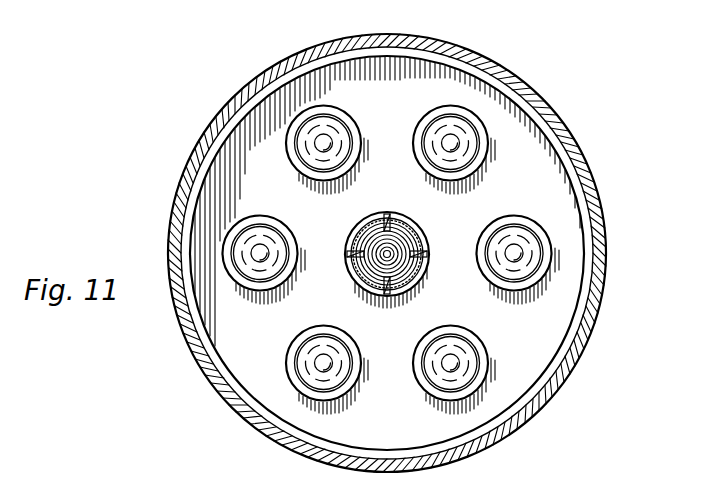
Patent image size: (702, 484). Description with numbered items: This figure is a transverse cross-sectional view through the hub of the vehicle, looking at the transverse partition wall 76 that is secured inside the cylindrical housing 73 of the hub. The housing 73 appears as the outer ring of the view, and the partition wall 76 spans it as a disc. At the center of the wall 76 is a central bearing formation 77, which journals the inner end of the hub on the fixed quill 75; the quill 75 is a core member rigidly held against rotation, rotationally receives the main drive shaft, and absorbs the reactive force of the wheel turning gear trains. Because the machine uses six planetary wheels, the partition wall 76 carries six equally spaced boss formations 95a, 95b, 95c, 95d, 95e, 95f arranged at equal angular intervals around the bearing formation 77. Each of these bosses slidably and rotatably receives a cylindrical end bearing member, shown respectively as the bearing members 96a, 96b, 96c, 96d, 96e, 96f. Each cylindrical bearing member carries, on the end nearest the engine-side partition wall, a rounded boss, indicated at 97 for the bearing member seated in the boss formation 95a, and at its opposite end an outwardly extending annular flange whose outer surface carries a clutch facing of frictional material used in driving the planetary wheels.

The cylindrical housing 73 is at (600, 204).
The transverse partition wall 76 is at (548, 160).
The central bearing formation 77 is at (372, 213).
The fixed quill 75 is at (406, 228).
The boss formation 95a is at (486, 358).
The boss formation 95b is at (287, 366).
The boss formation 95c is at (255, 287).
The boss formation 95d is at (291, 162).
The boss formation 95e is at (439, 108).
The boss formation 95f is at (523, 218).
The cylindrical end bearing member 96a is at (432, 362).
The cylindrical end bearing member 96b is at (318, 348).
The cylindrical end bearing member 96c is at (272, 238).
The cylindrical end bearing member 96d is at (331, 116).
The cylindrical end bearing member 96e is at (466, 130).
The cylindrical end bearing member 96f is at (488, 265).
The rounded boss 97 is at (452, 354).